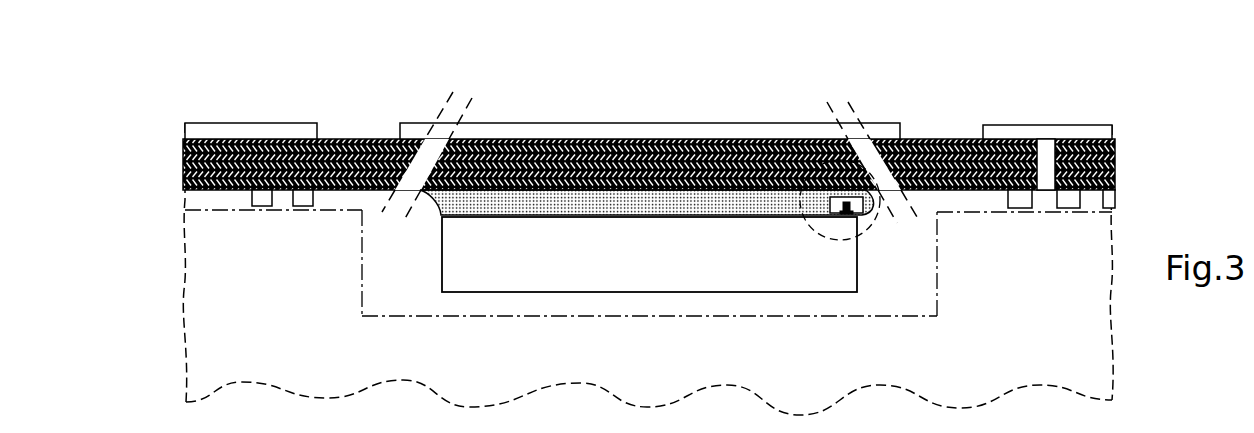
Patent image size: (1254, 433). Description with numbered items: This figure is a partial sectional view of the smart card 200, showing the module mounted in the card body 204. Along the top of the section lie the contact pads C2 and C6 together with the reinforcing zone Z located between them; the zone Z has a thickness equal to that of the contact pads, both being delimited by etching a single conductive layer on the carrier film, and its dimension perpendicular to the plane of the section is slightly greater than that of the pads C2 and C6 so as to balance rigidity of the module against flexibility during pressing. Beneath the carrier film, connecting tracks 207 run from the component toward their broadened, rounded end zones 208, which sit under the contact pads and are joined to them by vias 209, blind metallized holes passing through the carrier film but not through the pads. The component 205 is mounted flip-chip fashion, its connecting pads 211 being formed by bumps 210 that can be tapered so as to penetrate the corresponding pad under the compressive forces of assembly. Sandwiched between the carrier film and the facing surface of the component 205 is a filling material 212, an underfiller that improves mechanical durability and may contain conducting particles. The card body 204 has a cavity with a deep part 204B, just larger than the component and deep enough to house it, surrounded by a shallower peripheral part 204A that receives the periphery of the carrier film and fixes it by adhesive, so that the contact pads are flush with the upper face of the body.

The card 200 is at (732, 57).
The contact pad C2 is at (250, 128).
The contact pad C6 is at (1050, 128).
The reinforcing zone Z is at (580, 128).
The card body 204 is at (818, 365).
The peripheral part 204A is at (350, 206).
The deep part 204B is at (483, 313).
The component 205 is at (672, 268).
The connecting tracks 207 is at (305, 207).
The end zones 208 is at (1020, 210).
The vias 209 is at (1042, 197).
The bumps 210 is at (870, 221).
The connecting pads 211 is at (838, 197).
The filling material 212 is at (687, 205).